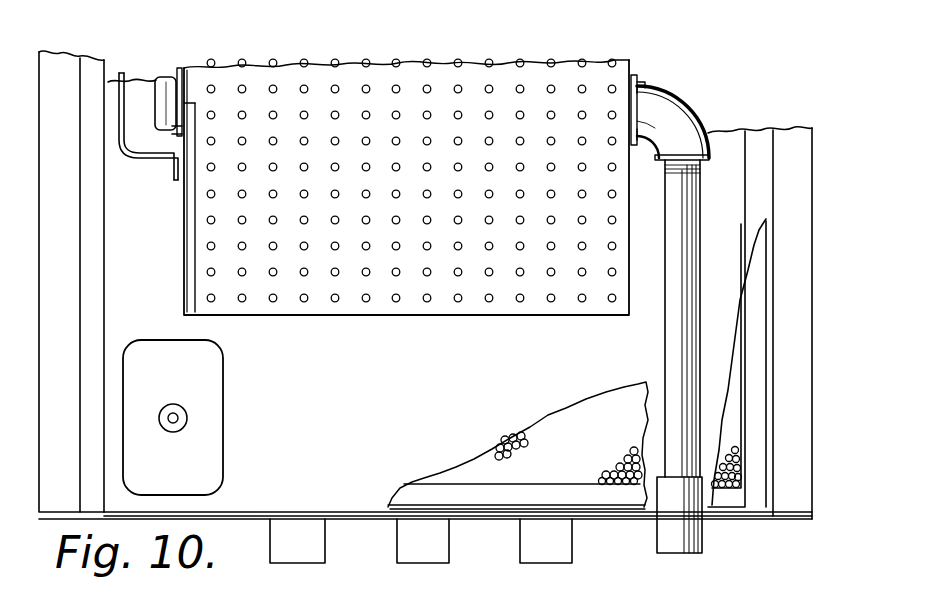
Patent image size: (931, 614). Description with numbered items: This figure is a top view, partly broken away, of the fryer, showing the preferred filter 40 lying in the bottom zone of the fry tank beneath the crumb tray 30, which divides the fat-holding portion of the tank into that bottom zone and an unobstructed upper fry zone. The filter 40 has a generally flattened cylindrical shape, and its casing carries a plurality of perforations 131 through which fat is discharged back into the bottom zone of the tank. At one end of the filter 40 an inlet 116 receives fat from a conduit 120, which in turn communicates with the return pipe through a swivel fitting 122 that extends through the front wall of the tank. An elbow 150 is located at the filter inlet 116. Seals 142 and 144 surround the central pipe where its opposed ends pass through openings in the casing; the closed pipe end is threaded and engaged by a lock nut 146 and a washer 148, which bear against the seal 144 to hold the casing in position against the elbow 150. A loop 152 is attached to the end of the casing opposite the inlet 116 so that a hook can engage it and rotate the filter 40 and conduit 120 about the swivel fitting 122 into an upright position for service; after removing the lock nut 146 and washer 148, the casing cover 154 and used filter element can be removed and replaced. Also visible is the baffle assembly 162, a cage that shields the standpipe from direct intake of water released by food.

The crumb tray 30 is at (542, 426).
The filter 40 is at (375, 225).
The filter inlet 116 is at (644, 94).
The conduit 120 is at (664, 326).
The swivel fitting 122 is at (658, 531).
The perforations 131 is at (430, 276).
The seal 142 is at (635, 76).
The seal 144 is at (180, 68).
The lock nut 146 is at (164, 77).
The washer 148 is at (175, 135).
The elbow 150 is at (693, 99).
The loop 152 is at (125, 162).
The casing cover 154 is at (183, 257).
The baffle assembly 162 is at (224, 396).